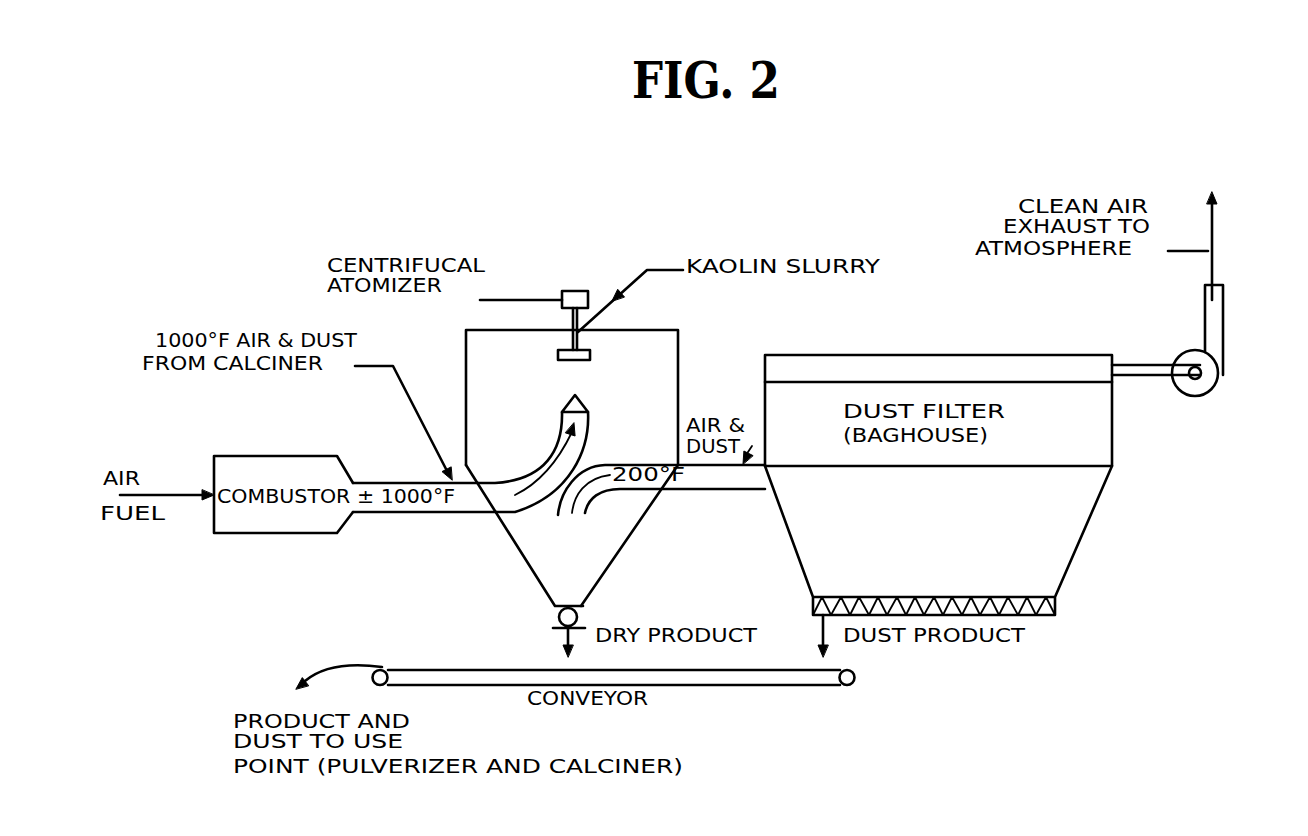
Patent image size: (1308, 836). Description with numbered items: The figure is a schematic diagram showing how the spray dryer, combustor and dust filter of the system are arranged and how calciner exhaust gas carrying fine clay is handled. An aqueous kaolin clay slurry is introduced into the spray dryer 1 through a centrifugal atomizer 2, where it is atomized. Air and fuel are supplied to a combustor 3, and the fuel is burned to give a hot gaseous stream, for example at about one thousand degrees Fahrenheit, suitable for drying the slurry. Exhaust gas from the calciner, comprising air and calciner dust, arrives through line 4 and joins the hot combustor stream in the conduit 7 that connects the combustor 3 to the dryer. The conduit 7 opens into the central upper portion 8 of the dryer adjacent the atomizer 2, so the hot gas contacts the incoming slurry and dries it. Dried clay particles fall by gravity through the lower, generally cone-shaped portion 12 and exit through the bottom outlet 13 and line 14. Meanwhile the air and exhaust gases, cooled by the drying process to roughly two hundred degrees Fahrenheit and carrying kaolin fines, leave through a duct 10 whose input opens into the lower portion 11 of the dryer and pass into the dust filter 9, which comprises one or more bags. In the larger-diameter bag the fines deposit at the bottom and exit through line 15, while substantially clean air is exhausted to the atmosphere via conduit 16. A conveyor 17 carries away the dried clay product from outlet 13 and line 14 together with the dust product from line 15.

The spray dryer 1 is at (691, 372).
The centrifugal atomizer 2 is at (576, 289).
The combustor 3 is at (262, 533).
The line 4 is at (416, 413).
The conduit 7 is at (456, 514).
The central upper portion 8 is at (578, 382).
The dust filter 9 is at (1127, 447).
The duct 10 is at (697, 492).
The lower portion 11 is at (568, 570).
The cone-shaped portion 12 is at (605, 558).
The bottom outlet 13 is at (580, 617).
The line 14 is at (560, 636).
The line 15 is at (822, 628).
The conduit 16 is at (1224, 325).
The conveyor 17 is at (452, 687).